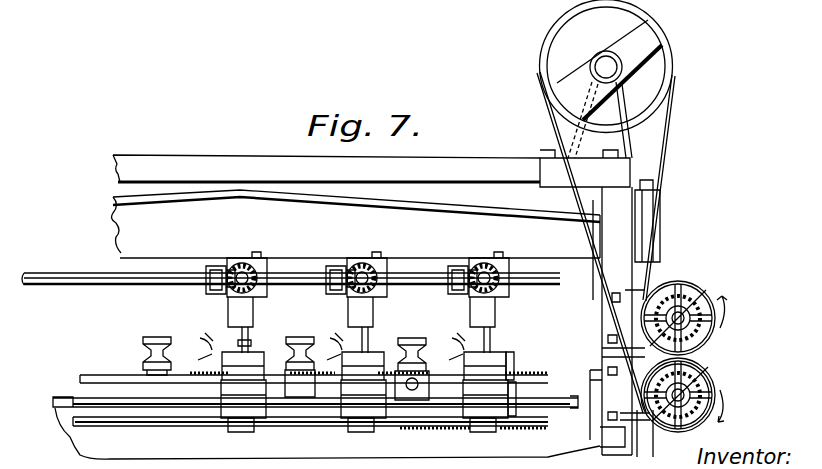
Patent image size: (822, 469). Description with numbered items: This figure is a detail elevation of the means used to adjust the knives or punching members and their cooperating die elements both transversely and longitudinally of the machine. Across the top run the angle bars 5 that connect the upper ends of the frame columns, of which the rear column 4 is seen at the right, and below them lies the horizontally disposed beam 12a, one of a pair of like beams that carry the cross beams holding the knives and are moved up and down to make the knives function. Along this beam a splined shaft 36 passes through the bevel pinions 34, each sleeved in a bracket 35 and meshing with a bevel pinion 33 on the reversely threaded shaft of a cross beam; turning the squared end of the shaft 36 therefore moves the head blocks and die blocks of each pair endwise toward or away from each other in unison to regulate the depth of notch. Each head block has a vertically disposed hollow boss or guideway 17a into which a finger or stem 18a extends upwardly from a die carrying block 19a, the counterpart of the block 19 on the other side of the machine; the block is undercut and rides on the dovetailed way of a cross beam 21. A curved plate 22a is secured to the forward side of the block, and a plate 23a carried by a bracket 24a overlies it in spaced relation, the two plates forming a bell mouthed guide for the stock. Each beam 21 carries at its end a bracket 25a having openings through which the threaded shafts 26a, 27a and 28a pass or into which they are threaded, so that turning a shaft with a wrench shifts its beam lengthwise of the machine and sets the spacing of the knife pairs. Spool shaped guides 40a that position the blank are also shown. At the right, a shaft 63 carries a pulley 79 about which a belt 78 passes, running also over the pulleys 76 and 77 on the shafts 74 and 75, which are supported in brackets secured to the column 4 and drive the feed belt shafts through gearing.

The angle bar 5 is at (489, 164).
The longitudinally extending beam 12a is at (396, 214).
The splined shaft 36 is at (102, 285).
The bracket 35 is at (212, 268).
The bevel pinion 34 is at (230, 268).
The bevel pinion 33 is at (247, 263).
The hollow boss or guideway 17a is at (255, 314).
The finger or stem 18a is at (237, 331).
The bracket 24a is at (252, 343).
The die carrying block 19a is at (381, 352).
The die carrying block 19 is at (514, 366).
The cross beam 21 is at (516, 400).
The bracket 25a is at (243, 430).
The shaft 26a is at (90, 361).
The intermediate shaft 27a is at (82, 402).
The shaft 28a is at (136, 423).
The spool shaped guide 40a is at (145, 342).
The plate 23a is at (206, 348).
The curved plate 22a is at (211, 359).
The rear column 4 is at (613, 433).
The shaft 63 is at (608, 66).
The pulley 79 is at (653, 105).
The belt 78 is at (661, 150).
The shaft 74 is at (691, 300).
The pulley 76 is at (704, 312).
The shaft 75 is at (718, 408).
The pulley 77 is at (700, 386).